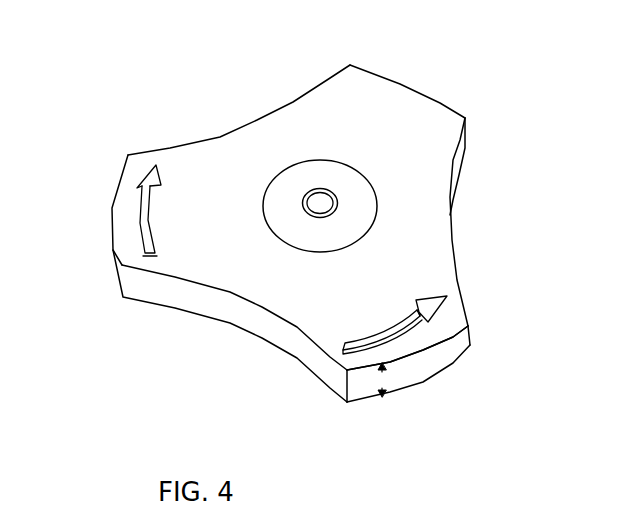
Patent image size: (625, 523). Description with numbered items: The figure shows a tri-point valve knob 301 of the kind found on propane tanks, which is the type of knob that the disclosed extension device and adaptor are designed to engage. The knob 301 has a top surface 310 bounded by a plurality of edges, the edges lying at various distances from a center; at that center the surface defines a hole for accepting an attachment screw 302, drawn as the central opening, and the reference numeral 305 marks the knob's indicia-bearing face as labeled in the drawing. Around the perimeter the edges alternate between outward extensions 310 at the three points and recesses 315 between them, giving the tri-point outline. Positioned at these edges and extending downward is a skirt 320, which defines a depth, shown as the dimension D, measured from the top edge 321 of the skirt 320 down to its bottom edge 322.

The knob 301 is at (453, 158).
The attachment screw 302 is at (363, 203).
The top indicia surface 305 is at (262, 288).
The top surface 310 is at (420, 83).
The recesses 315 is at (257, 120).
The skirt 320 is at (337, 378).
The top edge 321 is at (422, 349).
The bottom edge 322 is at (408, 386).